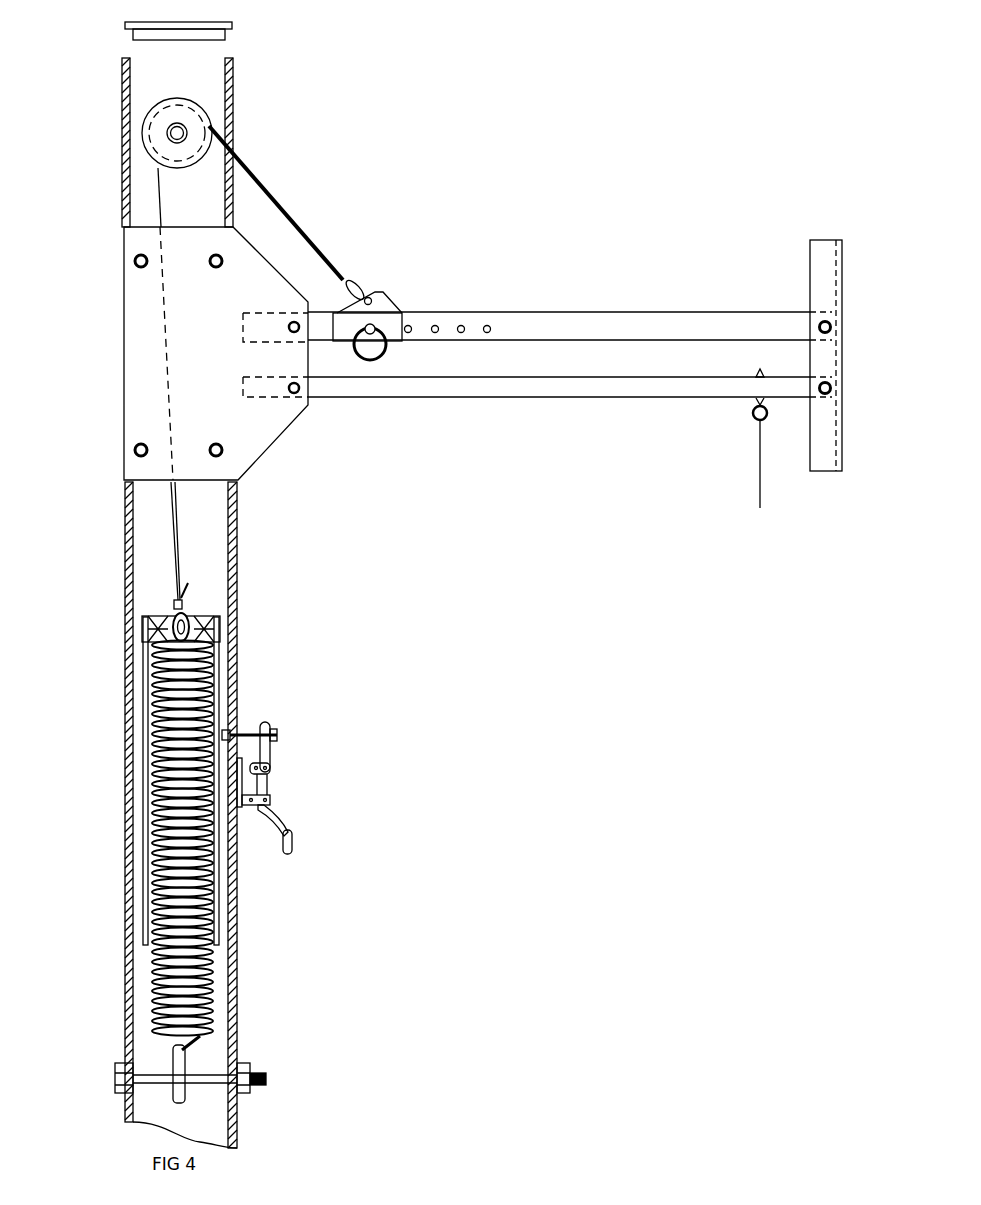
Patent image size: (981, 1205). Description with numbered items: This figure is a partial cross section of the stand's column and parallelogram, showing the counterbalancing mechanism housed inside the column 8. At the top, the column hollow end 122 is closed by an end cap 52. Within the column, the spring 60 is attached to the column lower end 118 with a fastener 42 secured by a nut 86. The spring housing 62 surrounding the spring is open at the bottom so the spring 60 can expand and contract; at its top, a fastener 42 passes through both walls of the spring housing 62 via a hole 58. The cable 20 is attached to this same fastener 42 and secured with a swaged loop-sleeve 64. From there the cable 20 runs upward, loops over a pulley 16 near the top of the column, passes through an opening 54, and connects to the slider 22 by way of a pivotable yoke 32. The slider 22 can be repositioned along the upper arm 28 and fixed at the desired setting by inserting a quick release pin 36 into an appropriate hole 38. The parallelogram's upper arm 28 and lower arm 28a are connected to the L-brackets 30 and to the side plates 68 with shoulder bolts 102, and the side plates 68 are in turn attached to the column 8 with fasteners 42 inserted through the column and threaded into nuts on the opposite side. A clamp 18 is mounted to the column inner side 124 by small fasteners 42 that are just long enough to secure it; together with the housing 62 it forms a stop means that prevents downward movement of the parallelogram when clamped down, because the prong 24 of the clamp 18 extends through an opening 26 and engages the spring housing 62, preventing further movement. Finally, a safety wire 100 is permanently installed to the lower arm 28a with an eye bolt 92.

The column 8 is at (128, 785).
The pulley 16 is at (155, 133).
The clamp 18 is at (275, 770).
The cable 20 is at (290, 213).
The slider 22 is at (390, 318).
The prong 24 is at (268, 728).
The opening 26 is at (247, 730).
The upper arm 28 is at (600, 315).
The lower arm 28a is at (628, 390).
The L-brackets 30 is at (822, 268).
The pivotable yoke 32 is at (367, 300).
The quick release pin 36 is at (385, 346).
The hole 38 is at (435, 326).
The fastener 42 is at (141, 451).
The end cap 52 is at (235, 38).
The opening 54 is at (232, 133).
The hole 58 is at (152, 617).
The spring 60 is at (152, 1020).
The spring housing 62 is at (146, 925).
The swaged loop-sleeve 64 is at (175, 605).
The side plates 68 is at (147, 351).
The nut 86 is at (250, 1064).
The eye bolt 92 is at (758, 418).
The safety wire 100 is at (765, 512).
The shoulder bolts 102 is at (178, 132).
The column lower end 118 is at (112, 1110).
The column hollow end 122 is at (155, 80).
The column inner side 124 is at (240, 910).